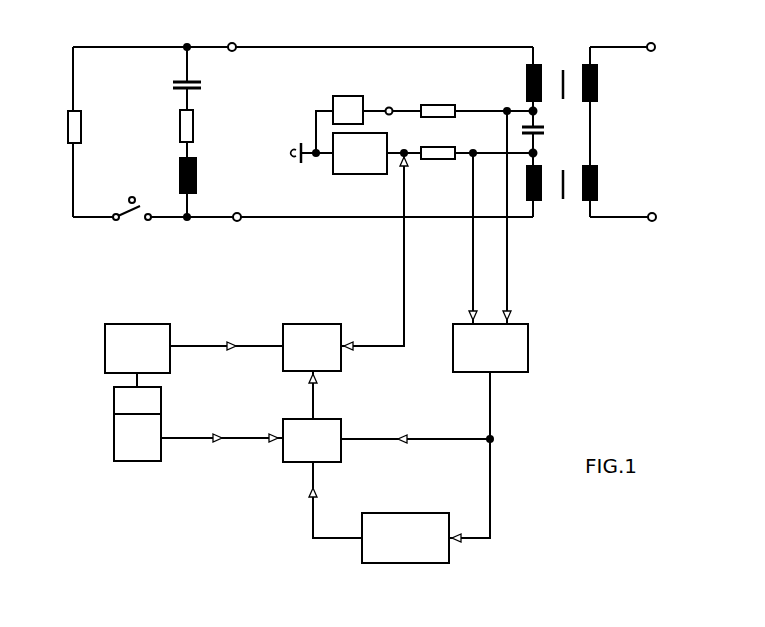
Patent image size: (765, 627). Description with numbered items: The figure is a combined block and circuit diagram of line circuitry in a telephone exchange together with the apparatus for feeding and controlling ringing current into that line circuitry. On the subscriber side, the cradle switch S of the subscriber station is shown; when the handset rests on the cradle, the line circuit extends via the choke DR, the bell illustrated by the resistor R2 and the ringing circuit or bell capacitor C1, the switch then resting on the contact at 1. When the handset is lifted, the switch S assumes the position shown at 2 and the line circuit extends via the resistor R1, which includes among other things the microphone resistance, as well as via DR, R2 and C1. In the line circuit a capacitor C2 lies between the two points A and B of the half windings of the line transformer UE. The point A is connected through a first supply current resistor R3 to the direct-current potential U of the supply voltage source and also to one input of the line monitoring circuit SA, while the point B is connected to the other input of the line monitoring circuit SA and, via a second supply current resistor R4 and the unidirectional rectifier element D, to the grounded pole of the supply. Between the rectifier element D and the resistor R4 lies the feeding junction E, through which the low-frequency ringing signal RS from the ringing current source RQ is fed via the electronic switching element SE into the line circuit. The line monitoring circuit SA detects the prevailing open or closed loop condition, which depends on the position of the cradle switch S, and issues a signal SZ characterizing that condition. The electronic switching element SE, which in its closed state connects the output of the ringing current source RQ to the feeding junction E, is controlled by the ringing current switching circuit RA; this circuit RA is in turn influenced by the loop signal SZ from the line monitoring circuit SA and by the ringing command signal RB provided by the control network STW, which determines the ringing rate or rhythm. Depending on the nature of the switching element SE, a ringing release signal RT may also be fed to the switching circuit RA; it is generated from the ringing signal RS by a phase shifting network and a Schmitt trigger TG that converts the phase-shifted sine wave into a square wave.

The resistor R1 is at (59, 127).
The ringing circuit capacitor C1 is at (172, 85).
The resistor R2 is at (170, 126).
The choke DR is at (171, 175).
The cradle switch S is at (126, 228).
The point 1 is at (126, 190).
The position 2 is at (151, 208).
The direct-current potential U is at (333, 100).
The rectifier element D is at (376, 174).
The feeding junction E is at (374, 239).
The first supply current resistor R3 is at (438, 99).
The second supply current resistor R4 is at (438, 141).
The point A is at (542, 110).
The point B is at (541, 154).
The capacitor C2 is at (546, 130).
The line transformer UE is at (591, 121).
The ringing current source RQ is at (157, 324).
The ringing signal RS is at (226, 334).
The electronic switching element SE is at (286, 324).
The Schmitt trigger TG is at (114, 413).
The ringing release signal RT is at (222, 426).
The ringing current switching circuit RA is at (283, 451).
The signal SZ is at (415, 428).
The line monitoring circuit SA is at (528, 345).
The ringing command signal RB is at (315, 500).
The control network STW is at (362, 558).